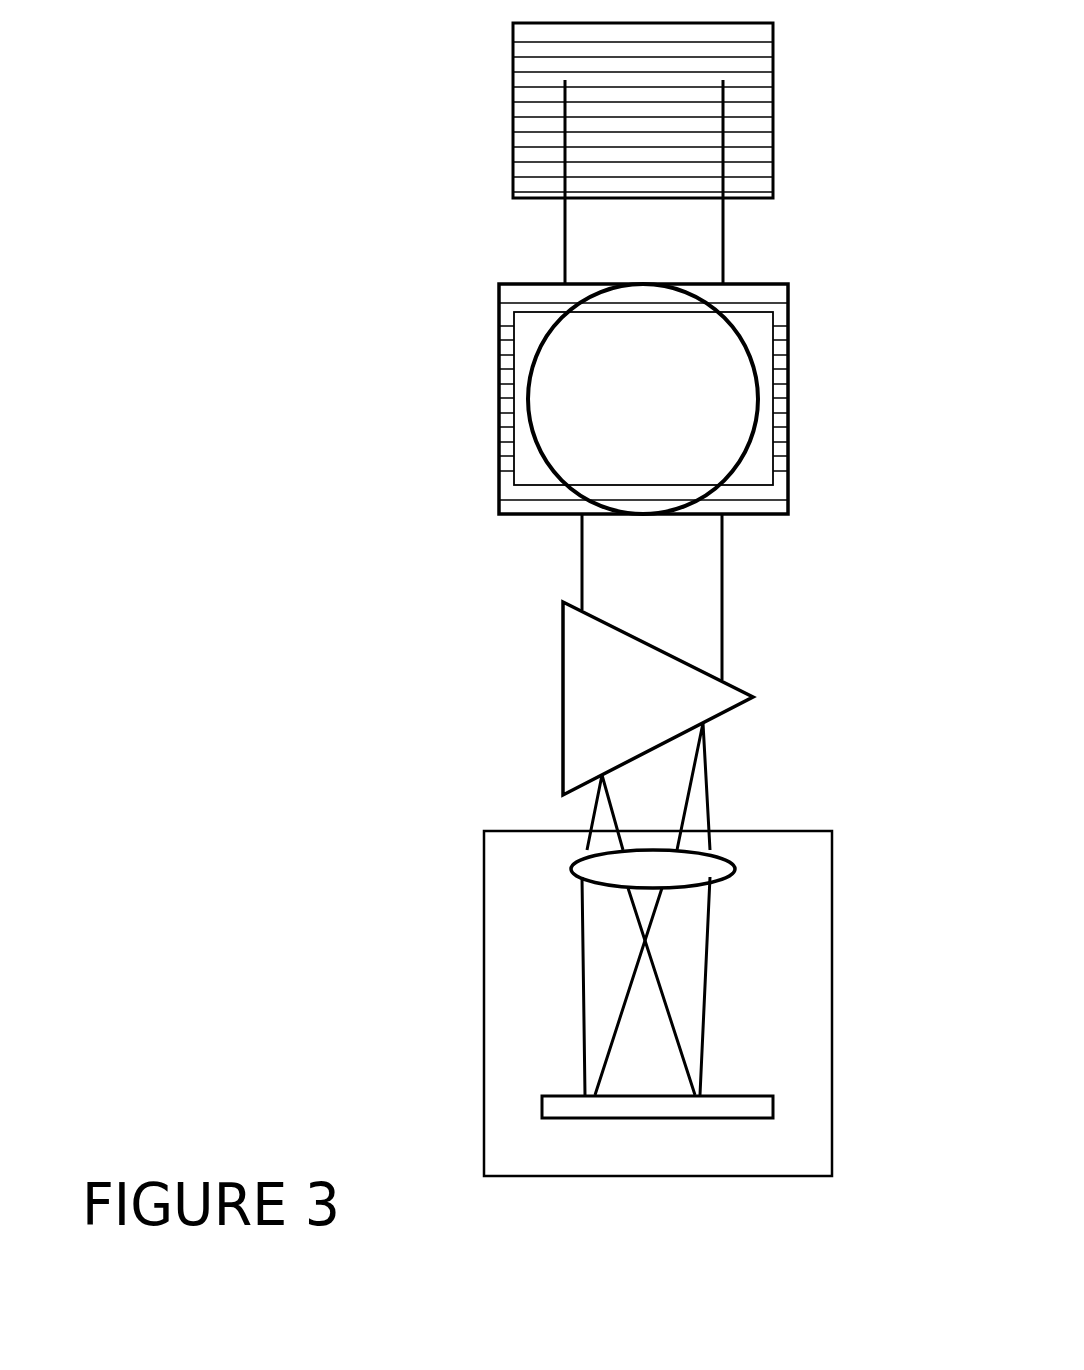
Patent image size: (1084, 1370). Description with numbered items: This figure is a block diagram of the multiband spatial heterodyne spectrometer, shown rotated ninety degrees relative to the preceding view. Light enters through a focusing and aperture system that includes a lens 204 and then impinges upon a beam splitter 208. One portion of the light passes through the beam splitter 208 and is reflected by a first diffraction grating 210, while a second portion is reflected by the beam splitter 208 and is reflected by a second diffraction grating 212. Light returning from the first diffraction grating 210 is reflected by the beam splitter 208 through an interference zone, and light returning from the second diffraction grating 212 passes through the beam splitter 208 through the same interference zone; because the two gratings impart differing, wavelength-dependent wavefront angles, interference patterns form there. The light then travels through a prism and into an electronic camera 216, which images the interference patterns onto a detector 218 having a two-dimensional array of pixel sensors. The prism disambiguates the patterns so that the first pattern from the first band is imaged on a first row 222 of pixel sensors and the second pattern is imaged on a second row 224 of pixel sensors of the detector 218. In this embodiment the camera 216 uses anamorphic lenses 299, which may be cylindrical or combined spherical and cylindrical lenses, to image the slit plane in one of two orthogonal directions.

The second diffraction grating 212 is at (762, 152).
The first diffraction grating 210 is at (772, 298).
The beam splitter 208 is at (527, 340).
The lens 204 is at (745, 410).
The anamorphic lens 299 is at (720, 860).
The electronic camera 216 is at (815, 917).
The first row of pixel sensors 222 is at (585, 1095).
The detector 218 is at (553, 1095).
The second row of pixel sensors 224 is at (703, 1095).